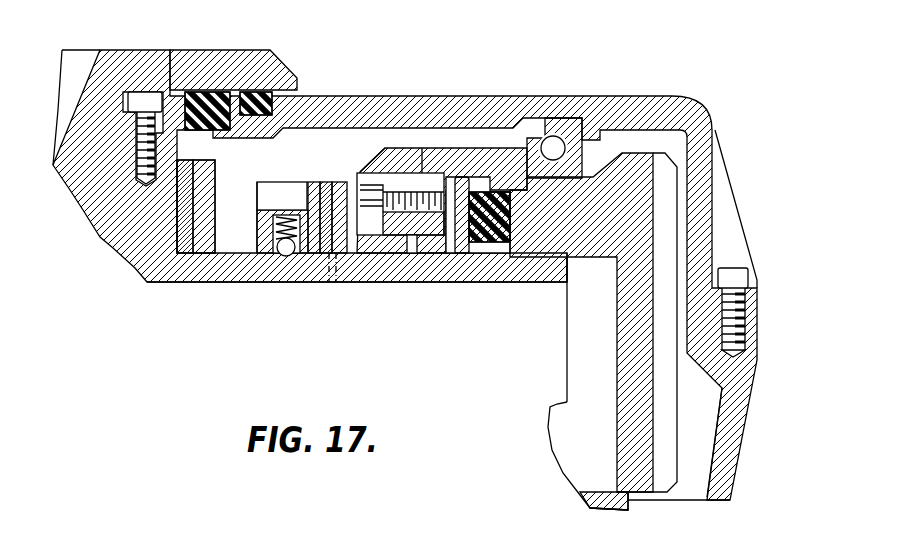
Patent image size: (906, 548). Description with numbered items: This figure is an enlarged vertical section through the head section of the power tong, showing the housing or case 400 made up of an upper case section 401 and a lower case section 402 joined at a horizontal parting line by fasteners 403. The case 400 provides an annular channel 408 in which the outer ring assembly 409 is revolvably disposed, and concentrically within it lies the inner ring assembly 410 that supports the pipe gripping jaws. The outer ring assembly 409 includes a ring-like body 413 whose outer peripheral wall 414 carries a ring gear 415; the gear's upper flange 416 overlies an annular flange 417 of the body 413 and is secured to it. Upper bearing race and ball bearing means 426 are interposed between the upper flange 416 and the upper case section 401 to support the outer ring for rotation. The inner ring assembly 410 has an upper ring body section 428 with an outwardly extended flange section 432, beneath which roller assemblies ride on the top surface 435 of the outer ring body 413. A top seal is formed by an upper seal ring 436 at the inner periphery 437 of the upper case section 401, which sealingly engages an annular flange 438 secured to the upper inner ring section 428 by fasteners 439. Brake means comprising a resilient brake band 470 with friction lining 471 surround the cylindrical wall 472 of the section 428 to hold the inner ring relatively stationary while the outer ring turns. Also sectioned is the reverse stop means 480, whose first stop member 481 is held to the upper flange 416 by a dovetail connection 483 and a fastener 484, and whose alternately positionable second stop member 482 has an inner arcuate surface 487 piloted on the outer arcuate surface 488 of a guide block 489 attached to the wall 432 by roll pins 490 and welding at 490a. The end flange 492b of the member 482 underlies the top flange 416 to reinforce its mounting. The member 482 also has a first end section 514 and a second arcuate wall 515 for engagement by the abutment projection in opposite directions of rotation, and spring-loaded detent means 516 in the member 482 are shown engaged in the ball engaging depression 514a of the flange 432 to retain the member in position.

The housing or case 400 is at (685, 92).
The upper case section 401 is at (703, 157).
The lower case section 402 is at (730, 440).
The fasteners 403 is at (733, 268).
The annular channel 408 is at (700, 420).
The outer ring assembly 409 is at (582, 508).
The inner ring assembly 410 is at (150, 288).
The ring-like body 413 is at (562, 422).
The outer peripheral wall 414 is at (628, 465).
The ring gear 415 is at (630, 443).
The upper flange 416 is at (477, 157).
The annular flange 417 is at (585, 340).
The upper bearing race and ball bearing means 426 is at (575, 120).
The upper ring body section 428 is at (137, 193).
The outwardly extended flange section 432 is at (523, 277).
The top surface 435 is at (557, 398).
The upper seal ring 436 is at (197, 100).
The inner periphery 437 is at (240, 97).
The annular flange 438 is at (263, 67).
The fasteners 439 is at (145, 90).
The brake band 470 is at (202, 232).
The friction lining 471 is at (183, 220).
The cylindrical wall 472 is at (185, 200).
The reverse stop means 480 is at (402, 140).
The first stop member 481 is at (387, 153).
The second stop member 482 is at (268, 249).
The dovetail connection 483 is at (415, 150).
The fastener 484 is at (437, 250).
The inner arcuate surface 487 is at (282, 196).
The outer arcuate surface 488 is at (323, 238).
The guide block 489 is at (342, 188).
The roll pins 490 is at (325, 260).
The welding 490a is at (352, 255).
The end flange 492b is at (412, 252).
The first end section 514 is at (302, 185).
The ball engaging depression 514a is at (283, 256).
The second arcuate wall 515 is at (257, 193).
The spring-loaded detent means 516 is at (258, 225).